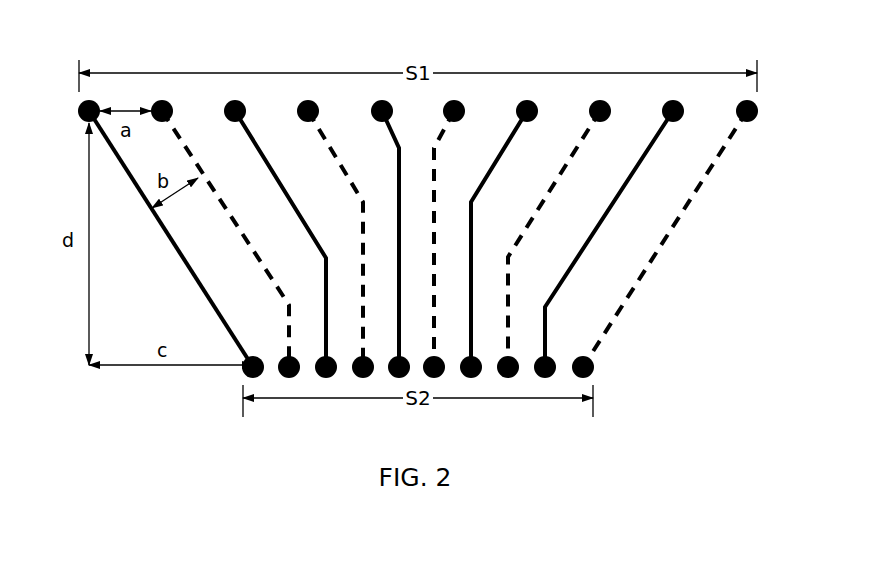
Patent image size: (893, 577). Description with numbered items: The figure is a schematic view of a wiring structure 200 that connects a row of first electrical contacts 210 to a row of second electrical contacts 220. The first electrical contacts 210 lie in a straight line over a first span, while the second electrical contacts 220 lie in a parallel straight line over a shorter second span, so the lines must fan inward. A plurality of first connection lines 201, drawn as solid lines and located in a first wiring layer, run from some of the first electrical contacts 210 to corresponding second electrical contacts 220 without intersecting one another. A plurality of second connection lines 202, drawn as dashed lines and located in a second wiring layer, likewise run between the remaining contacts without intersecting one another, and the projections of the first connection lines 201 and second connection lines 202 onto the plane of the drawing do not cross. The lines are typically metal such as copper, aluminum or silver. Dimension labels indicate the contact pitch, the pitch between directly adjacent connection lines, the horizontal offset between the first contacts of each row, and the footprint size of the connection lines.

The wiring structure 200 is at (668, 290).
The first connection lines 201 is at (261, 151).
The second connection lines 202 is at (333, 149).
The first electrical contacts 210 is at (538, 114).
The second electrical contacts 220 is at (545, 379).